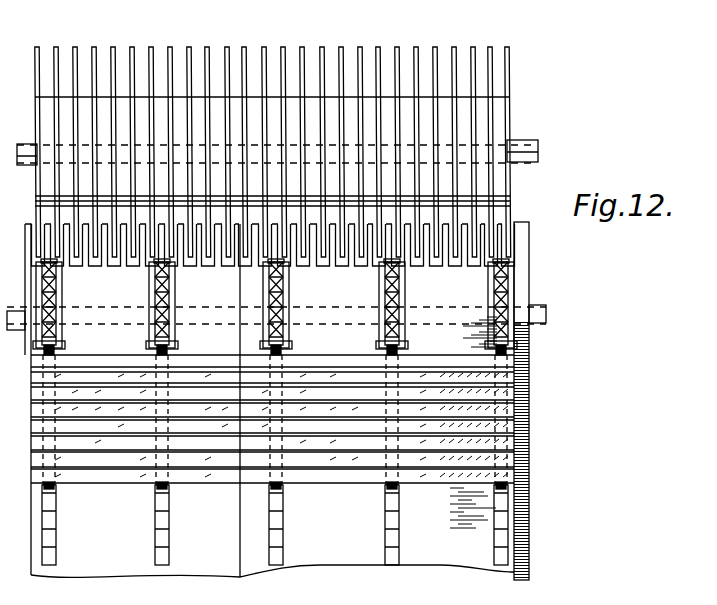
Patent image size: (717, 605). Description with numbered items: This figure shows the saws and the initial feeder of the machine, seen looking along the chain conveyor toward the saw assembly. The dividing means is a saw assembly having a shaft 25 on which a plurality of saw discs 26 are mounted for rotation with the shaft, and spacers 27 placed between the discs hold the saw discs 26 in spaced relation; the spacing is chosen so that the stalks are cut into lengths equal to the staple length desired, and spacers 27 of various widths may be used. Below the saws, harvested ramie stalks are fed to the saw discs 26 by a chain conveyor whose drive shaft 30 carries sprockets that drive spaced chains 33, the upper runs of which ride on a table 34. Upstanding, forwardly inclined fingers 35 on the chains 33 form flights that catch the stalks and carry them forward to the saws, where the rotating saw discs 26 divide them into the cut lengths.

The shaft 25 is at (532, 142).
The saw discs 26 is at (301, 46).
The spacers 27 is at (497, 97).
The drive shaft 30 is at (542, 315).
The spaced chains 33 is at (177, 517).
The table 34 is at (526, 516).
The fingers 35 is at (160, 350).